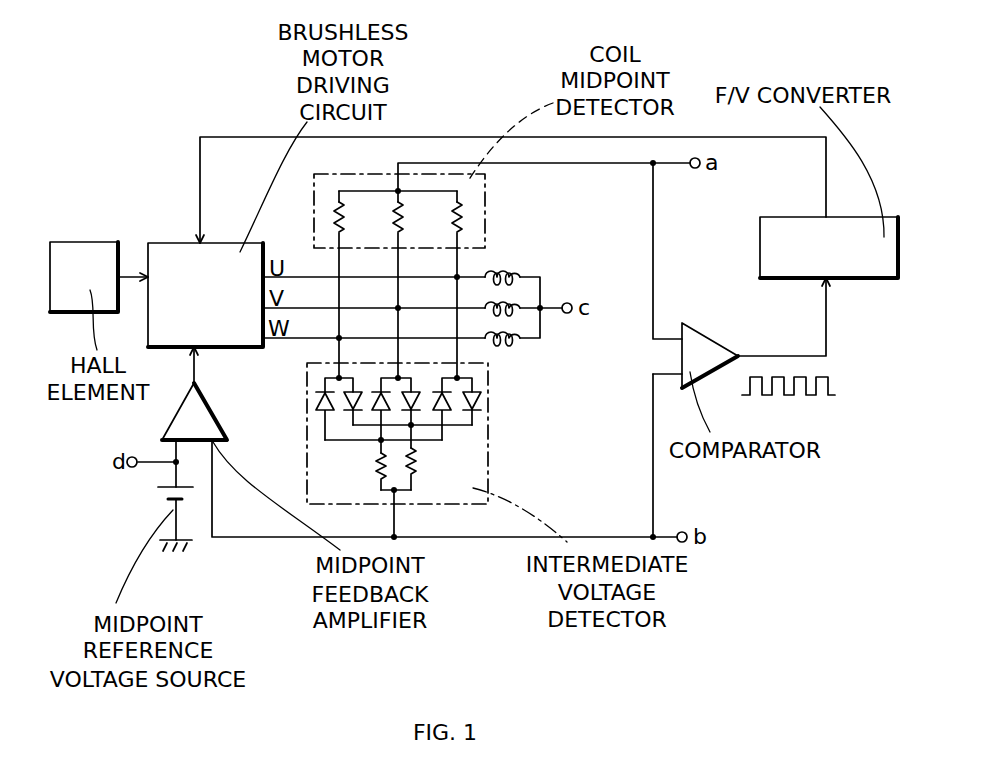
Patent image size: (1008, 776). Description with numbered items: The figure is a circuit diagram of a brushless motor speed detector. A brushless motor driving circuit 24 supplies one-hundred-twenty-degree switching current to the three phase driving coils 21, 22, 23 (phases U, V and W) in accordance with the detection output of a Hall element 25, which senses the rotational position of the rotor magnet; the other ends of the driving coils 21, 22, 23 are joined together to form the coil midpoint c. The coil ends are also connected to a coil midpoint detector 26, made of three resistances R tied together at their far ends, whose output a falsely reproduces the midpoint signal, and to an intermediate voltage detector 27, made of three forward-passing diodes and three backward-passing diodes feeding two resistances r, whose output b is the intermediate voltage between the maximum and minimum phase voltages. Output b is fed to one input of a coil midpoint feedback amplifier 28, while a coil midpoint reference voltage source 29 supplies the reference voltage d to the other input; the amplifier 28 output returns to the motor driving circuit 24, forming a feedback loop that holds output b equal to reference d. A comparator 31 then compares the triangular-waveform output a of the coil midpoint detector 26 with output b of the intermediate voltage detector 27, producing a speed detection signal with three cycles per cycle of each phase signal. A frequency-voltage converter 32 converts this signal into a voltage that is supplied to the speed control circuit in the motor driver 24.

The driving coil 21 is at (519, 271).
The driving coil 22 is at (518, 306).
The driving coil 23 is at (512, 342).
The brushless motor driving circuit 24 is at (164, 242).
The Hall element 25 is at (88, 241).
The coil midpoint detector 26 is at (487, 186).
The intermediate voltage detector 27 is at (480, 442).
The coil midpoint feedback amplifier 28 is at (203, 427).
The coil midpoint reference voltage source 29 is at (168, 495).
The comparator 31 is at (704, 340).
The frequency-voltage converter 32 is at (849, 216).